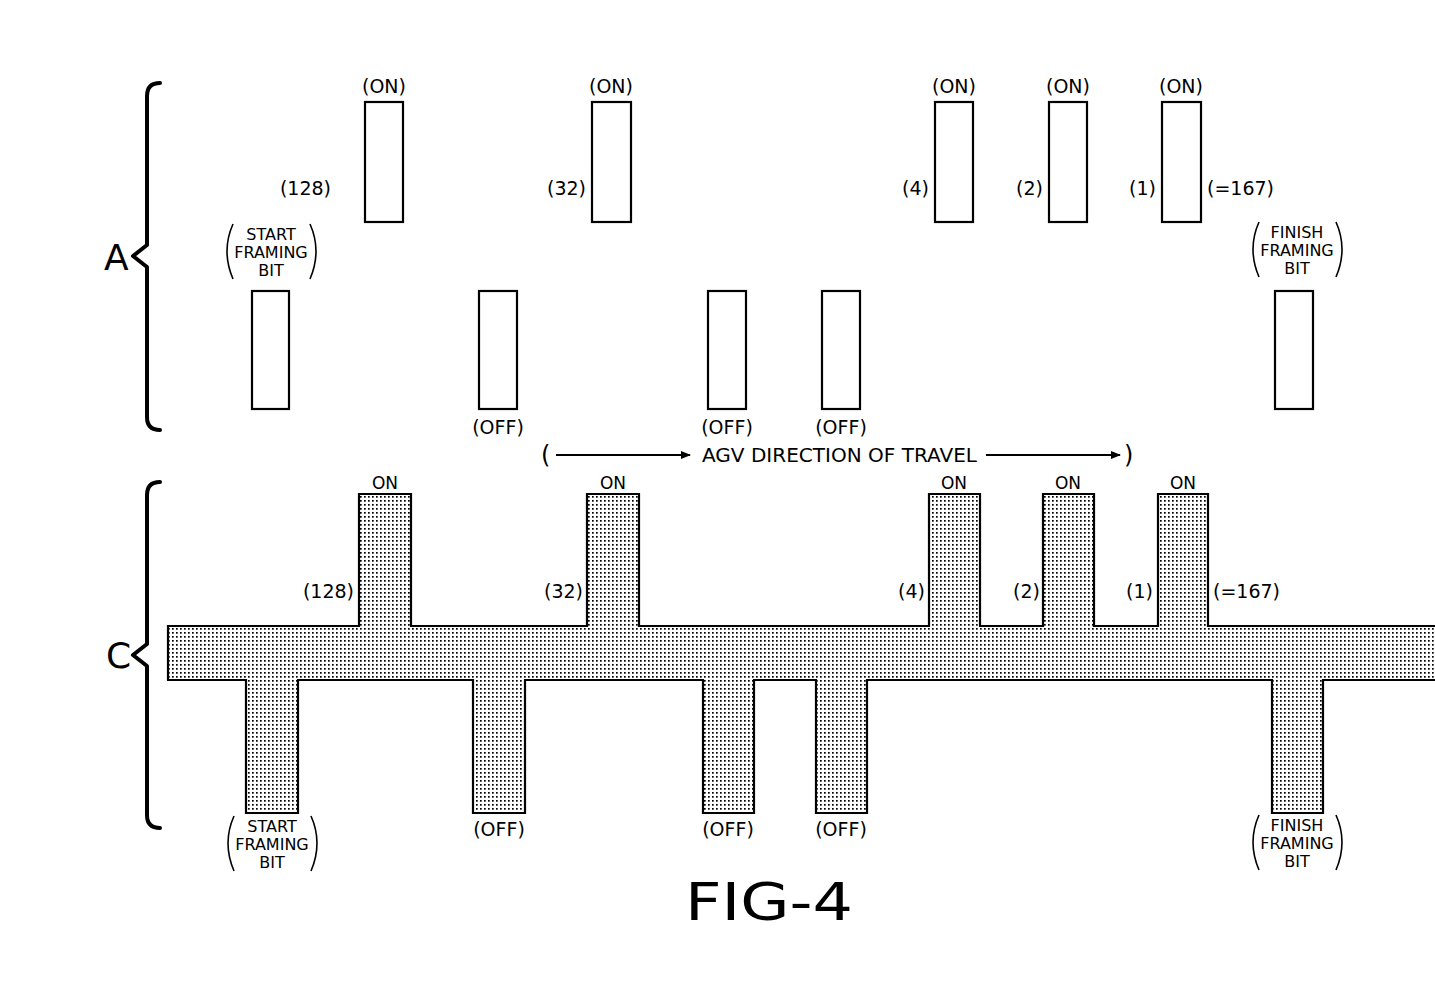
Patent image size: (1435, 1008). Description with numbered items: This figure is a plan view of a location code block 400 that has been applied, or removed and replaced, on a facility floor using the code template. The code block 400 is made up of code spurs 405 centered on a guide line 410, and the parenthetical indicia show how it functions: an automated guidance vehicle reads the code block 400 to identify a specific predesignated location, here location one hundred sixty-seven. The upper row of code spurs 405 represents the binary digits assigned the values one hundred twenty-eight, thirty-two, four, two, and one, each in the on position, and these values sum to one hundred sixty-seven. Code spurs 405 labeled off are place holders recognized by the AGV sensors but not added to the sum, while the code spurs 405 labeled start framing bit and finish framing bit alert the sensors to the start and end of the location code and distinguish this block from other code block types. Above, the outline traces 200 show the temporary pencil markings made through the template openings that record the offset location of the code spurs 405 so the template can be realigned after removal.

The trace 200 is at (390, 180).
The location code block 400 is at (801, 703).
The code spur 405 is at (398, 573).
The guide line 410 is at (1337, 642).